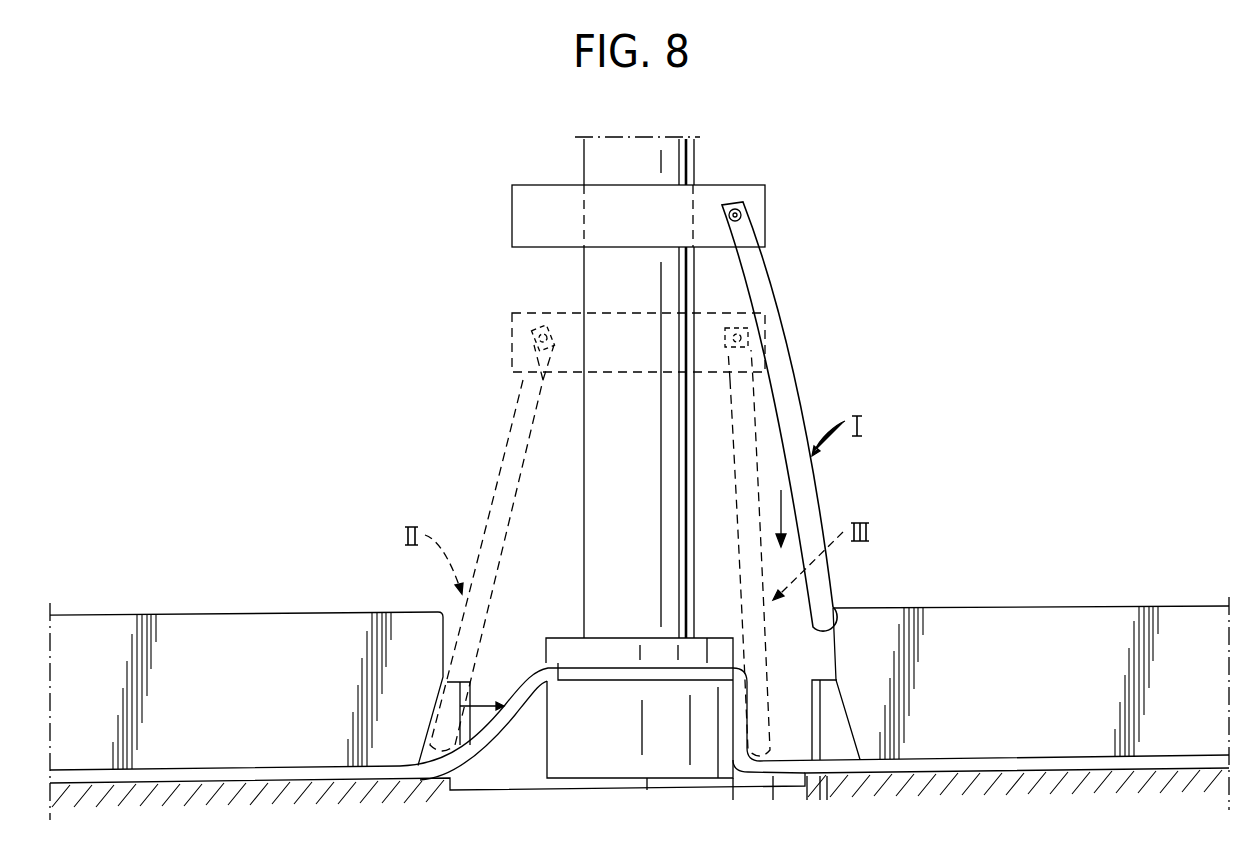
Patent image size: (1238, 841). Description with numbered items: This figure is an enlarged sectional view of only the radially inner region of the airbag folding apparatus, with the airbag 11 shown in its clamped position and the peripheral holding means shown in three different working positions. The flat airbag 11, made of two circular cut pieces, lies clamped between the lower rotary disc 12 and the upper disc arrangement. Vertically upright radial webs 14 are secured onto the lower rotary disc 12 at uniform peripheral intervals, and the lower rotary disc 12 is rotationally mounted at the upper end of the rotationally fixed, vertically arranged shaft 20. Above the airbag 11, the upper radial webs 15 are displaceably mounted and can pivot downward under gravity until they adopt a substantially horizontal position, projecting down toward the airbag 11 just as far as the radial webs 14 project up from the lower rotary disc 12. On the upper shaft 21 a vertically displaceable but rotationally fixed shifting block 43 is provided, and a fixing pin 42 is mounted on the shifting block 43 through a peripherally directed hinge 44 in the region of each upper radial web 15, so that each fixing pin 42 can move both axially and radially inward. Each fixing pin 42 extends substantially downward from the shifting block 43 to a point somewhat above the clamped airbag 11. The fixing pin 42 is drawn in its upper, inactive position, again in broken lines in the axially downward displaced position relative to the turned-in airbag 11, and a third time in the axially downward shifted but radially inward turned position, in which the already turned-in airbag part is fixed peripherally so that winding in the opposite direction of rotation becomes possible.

The airbag 11 is at (510, 723).
The lower rotary disc 12 is at (950, 781).
The radial webs 14 is at (470, 727).
The upper radial webs 15 is at (300, 643).
The shaft 20 is at (668, 750).
The upper shaft 21 is at (598, 556).
The fixing pin 42 is at (787, 382).
The shifting block 43 is at (714, 197).
The hinge 44 is at (745, 216).